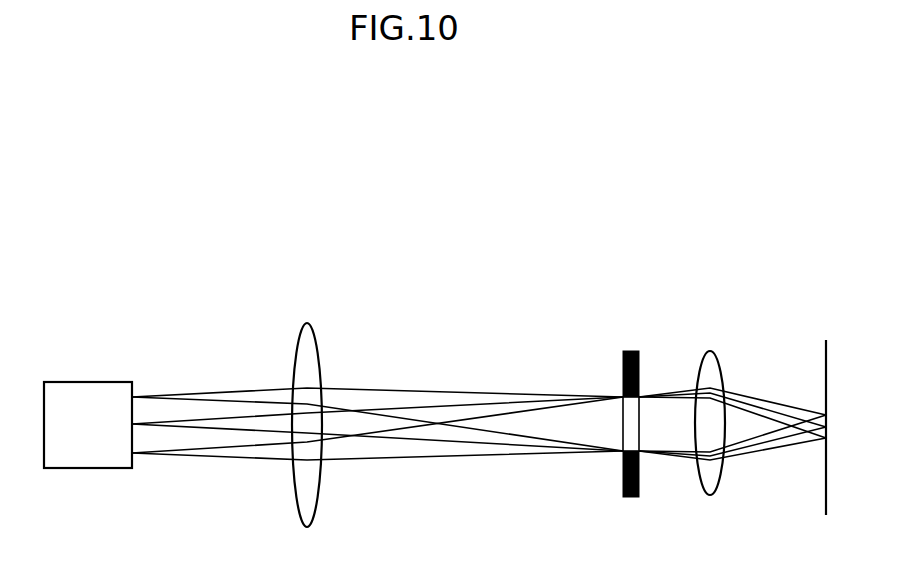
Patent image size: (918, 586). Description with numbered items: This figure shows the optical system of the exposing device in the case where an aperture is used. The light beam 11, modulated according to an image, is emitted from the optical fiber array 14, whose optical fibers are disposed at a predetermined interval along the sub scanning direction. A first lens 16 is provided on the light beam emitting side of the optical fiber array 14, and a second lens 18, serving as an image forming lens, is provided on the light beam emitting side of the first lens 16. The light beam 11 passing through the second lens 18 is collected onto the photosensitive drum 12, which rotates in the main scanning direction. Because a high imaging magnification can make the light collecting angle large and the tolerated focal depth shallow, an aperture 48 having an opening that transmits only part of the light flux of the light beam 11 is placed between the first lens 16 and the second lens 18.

The optical fiber array 14 is at (102, 382).
The first lens 16 is at (315, 342).
The light beam 11 is at (444, 388).
The aperture 48 is at (631, 351).
The second lens 18 is at (720, 368).
The photosensitive drum 12 is at (825, 472).